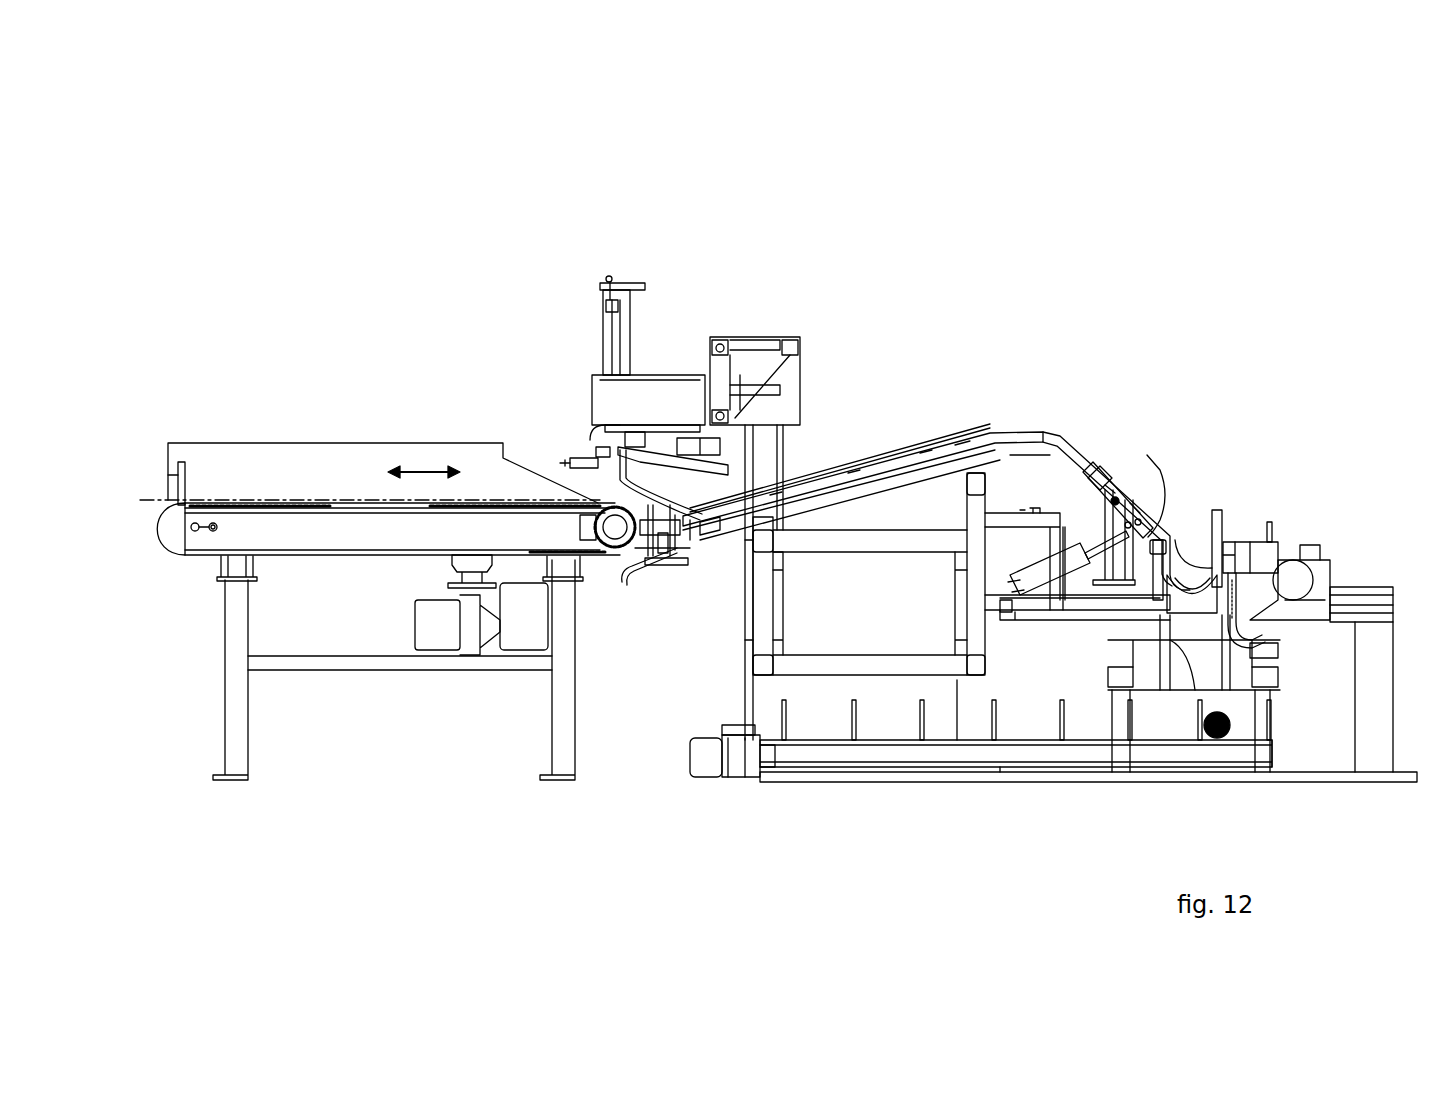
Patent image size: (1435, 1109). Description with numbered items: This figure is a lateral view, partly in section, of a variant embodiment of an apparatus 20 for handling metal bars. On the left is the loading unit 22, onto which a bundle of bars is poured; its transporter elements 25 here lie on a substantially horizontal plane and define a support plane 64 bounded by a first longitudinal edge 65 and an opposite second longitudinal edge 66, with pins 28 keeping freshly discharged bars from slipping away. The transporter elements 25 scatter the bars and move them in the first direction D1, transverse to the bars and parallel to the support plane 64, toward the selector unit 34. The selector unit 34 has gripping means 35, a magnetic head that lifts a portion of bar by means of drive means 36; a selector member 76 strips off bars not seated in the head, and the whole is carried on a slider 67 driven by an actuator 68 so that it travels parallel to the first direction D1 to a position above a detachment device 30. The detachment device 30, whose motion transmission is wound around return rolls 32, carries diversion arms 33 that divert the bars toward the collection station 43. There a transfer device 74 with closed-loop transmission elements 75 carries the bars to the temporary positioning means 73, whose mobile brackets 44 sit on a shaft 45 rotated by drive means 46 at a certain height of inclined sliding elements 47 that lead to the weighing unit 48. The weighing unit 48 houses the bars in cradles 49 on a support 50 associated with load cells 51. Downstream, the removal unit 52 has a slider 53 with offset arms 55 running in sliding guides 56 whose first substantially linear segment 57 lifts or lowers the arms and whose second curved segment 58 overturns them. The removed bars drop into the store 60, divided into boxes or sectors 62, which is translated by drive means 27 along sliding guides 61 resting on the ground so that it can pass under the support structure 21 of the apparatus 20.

The apparatus 20 is at (593, 181).
The loading unit 22 is at (351, 370).
The support structure 21 is at (750, 653).
The transporter elements 25 is at (265, 500).
The drive means 27 is at (704, 757).
The pins 28 is at (180, 479).
The detachment device 30 is at (648, 587).
The return rolls 32 is at (664, 550).
The diversion arms 33 is at (650, 496).
The selector unit 34 is at (551, 383).
The gripping means 35 is at (608, 448).
The drive means 36 is at (606, 338).
The collection station 43 is at (1072, 373).
The mobile brackets 44 is at (1148, 468).
The shaft 45 is at (1102, 504).
The drive means 46 is at (1028, 580).
The sliding elements 47 is at (1105, 468).
The weighing unit 48 is at (1170, 592).
The cradles 49 is at (1197, 595).
The support 50 is at (1274, 650).
The load cells 51 is at (1118, 677).
The removal unit 52 is at (1229, 503).
The slider 53 is at (1318, 598).
The arms 55 is at (1214, 521).
The sliding guides 56 is at (1245, 638).
The first substantially linear segment 57 is at (1239, 604).
The second curved segment 58 is at (1274, 694).
The store 60 is at (772, 707).
The sliding guides 61 is at (881, 775).
The boxes or sectors 62 is at (855, 719).
The support plane 64 is at (353, 498).
The first longitudinal edge 65 is at (199, 505).
The second longitudinal edge 66 is at (600, 500).
The slider 67 is at (690, 390).
The actuator 68 is at (738, 390).
The temporary positioning means 73 is at (1163, 468).
The transfer device 74 is at (876, 434).
The transmission elements 75 is at (769, 491).
The selector member 76 is at (578, 453).
The first direction D1 is at (421, 470).